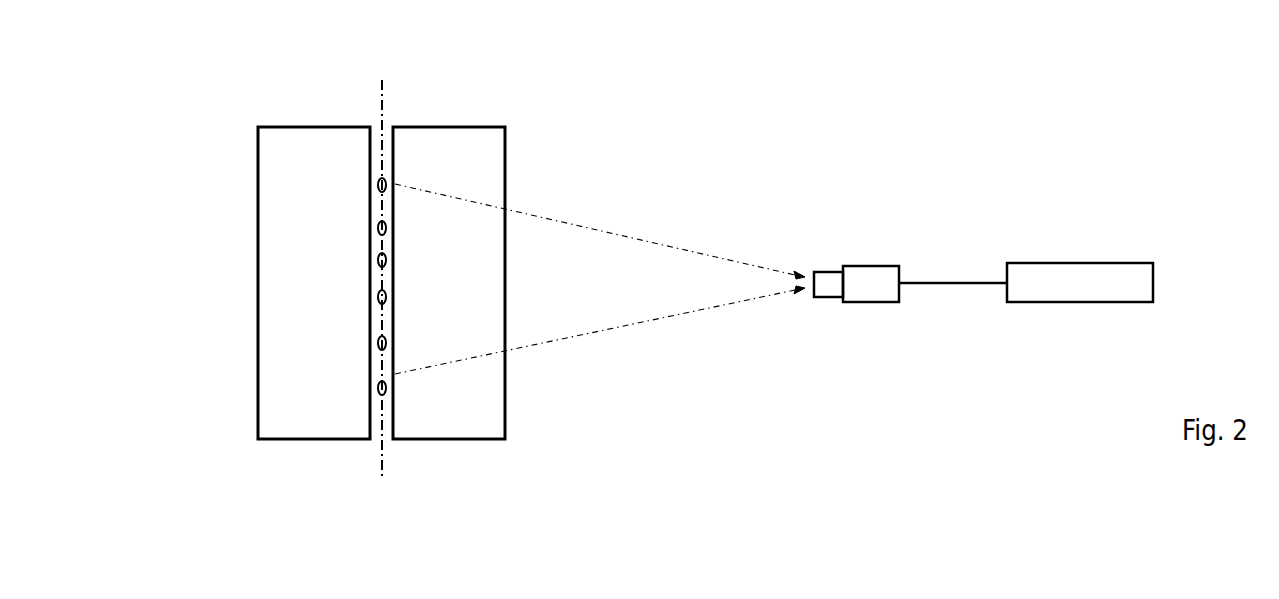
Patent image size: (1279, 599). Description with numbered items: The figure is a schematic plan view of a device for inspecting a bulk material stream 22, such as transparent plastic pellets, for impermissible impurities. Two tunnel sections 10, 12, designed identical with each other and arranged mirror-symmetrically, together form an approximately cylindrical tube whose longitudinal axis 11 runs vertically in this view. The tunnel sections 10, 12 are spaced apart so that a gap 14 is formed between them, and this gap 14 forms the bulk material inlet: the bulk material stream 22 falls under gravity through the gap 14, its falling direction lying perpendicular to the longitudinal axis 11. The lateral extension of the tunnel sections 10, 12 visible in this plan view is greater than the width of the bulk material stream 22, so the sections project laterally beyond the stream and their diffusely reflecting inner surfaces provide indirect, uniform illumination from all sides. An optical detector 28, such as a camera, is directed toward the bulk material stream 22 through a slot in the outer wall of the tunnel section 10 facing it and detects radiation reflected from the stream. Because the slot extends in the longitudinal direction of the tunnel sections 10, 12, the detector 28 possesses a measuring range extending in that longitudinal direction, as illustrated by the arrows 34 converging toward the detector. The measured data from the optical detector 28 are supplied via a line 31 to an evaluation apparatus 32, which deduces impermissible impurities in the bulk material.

The tunnel section 10 is at (458, 155).
The longitudinal axis 11 is at (382, 458).
The tunnel section 12 is at (300, 155).
The gap 14 is at (388, 157).
The bulk material stream 22 is at (381, 262).
The optical detector 28 is at (873, 280).
The line 31 is at (940, 280).
The evaluation apparatus 32 is at (1078, 278).
The arrows indicating measuring range 34 is at (610, 235).